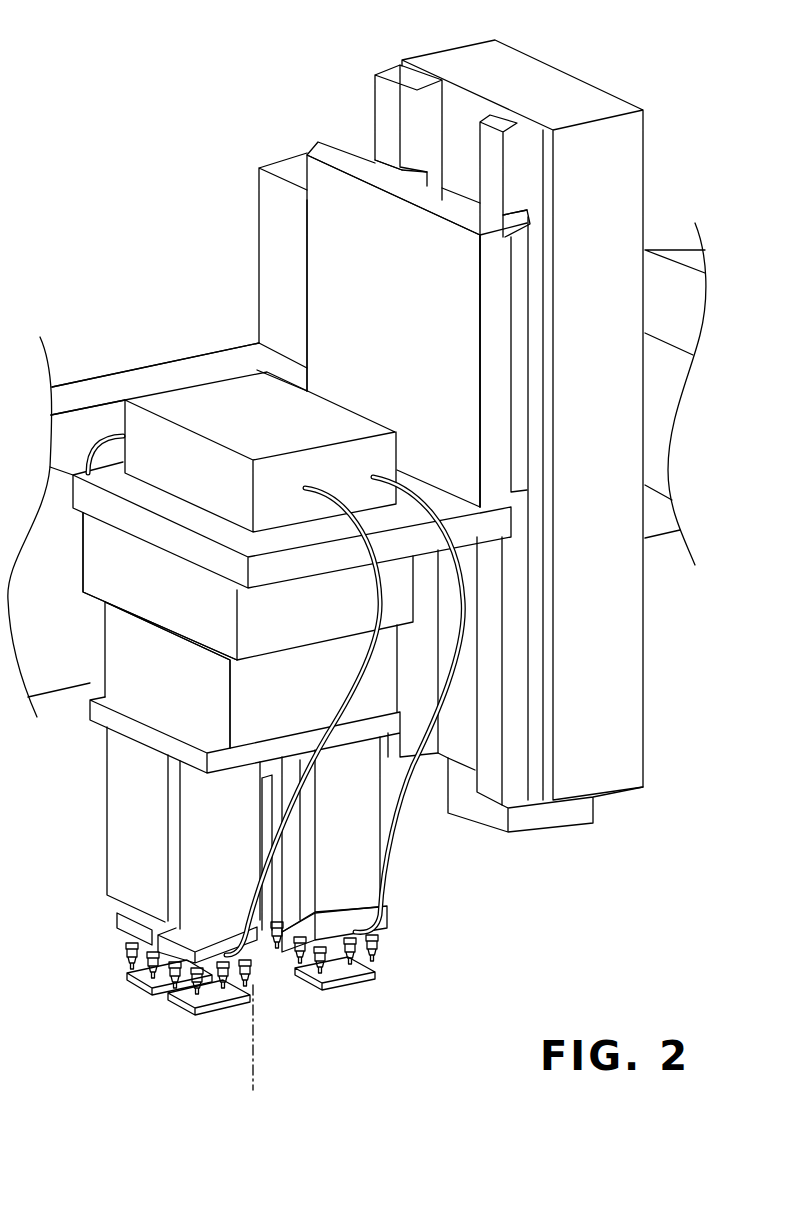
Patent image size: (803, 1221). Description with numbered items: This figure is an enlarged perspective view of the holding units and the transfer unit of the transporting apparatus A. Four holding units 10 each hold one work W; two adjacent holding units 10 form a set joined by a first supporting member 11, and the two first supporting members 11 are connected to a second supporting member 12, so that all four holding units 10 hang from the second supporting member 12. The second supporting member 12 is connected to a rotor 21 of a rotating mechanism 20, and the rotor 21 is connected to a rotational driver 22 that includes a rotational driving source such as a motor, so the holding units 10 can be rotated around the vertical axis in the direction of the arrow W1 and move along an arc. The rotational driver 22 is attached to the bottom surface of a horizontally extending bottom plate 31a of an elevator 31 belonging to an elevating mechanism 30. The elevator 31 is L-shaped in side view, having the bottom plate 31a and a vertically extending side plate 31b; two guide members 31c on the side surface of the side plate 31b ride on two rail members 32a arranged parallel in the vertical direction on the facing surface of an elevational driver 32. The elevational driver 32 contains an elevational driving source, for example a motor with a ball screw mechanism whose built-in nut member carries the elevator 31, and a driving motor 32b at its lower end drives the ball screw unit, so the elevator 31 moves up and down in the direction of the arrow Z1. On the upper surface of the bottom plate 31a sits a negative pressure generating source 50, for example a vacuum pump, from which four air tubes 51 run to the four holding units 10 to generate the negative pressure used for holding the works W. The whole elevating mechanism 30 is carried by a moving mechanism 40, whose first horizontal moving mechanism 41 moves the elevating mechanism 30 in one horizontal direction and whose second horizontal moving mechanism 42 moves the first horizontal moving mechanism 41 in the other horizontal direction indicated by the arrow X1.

The holding unit 10 is at (258, 860).
The first supporting member 11 is at (118, 845).
The second supporting member 12 is at (133, 734).
The rotating mechanism 20 is at (58, 568).
The rotor 21 is at (117, 625).
The rotational driver 22 is at (100, 588).
The elevating mechanism 30 is at (307, 5).
The elevator 31 is at (297, 125).
The bottom plate 31a is at (88, 506).
The side plate 31b is at (323, 265).
The guide member 31c is at (373, 152).
The elevational driver 32 is at (457, 202).
The rail member 32a is at (487, 132).
The driving motor 32b is at (524, 817).
The moving mechanism 40 is at (197, 315).
The first horizontal moving mechanism 41 is at (275, 330).
The second horizontal moving mechanism 42 is at (247, 353).
The negative pressure generating source 50 is at (193, 393).
The air tube 51 is at (110, 434).
The work W is at (137, 993).
The arrow W1 is at (221, 1051).
The arrow X1 is at (245, 220).
The arrow Z1 is at (400, 378).
The transporting apparatus A is at (146, 136).